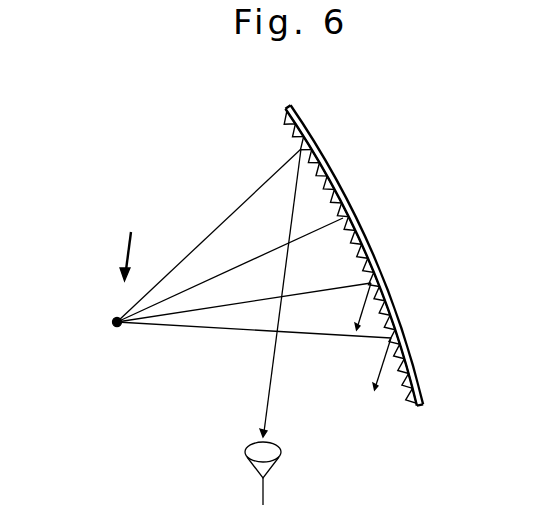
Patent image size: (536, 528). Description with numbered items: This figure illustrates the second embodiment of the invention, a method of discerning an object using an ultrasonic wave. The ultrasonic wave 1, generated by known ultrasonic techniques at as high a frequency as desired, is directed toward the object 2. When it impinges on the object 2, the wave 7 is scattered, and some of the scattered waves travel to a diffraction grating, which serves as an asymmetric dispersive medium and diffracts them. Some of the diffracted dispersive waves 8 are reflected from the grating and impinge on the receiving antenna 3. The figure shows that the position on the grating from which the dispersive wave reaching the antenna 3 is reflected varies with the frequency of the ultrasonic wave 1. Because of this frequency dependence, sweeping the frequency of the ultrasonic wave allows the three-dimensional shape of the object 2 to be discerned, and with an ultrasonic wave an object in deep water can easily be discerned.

The ultrasonic wave 1 is at (125, 247).
The object 2 is at (114, 333).
The receiving antenna 3 is at (271, 466).
The scattered wave 7 is at (253, 197).
The dispersive wave 8 is at (269, 393).